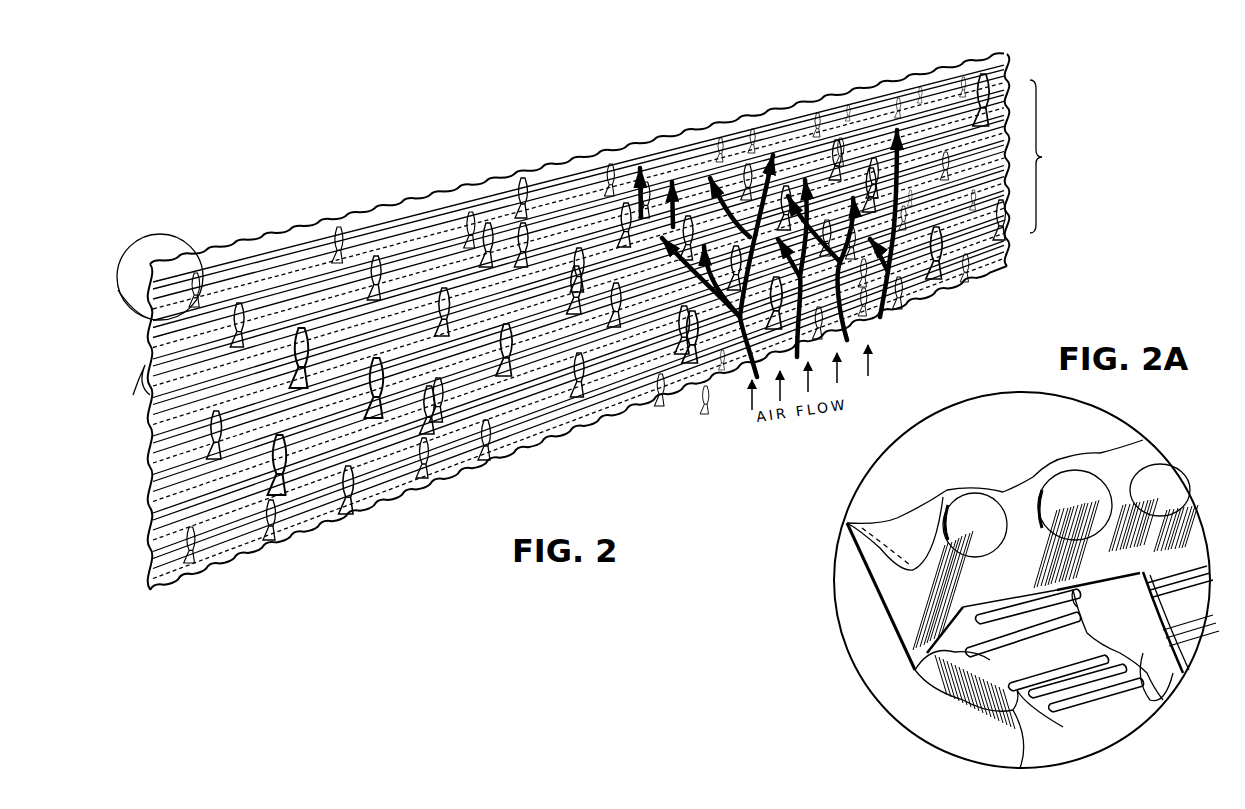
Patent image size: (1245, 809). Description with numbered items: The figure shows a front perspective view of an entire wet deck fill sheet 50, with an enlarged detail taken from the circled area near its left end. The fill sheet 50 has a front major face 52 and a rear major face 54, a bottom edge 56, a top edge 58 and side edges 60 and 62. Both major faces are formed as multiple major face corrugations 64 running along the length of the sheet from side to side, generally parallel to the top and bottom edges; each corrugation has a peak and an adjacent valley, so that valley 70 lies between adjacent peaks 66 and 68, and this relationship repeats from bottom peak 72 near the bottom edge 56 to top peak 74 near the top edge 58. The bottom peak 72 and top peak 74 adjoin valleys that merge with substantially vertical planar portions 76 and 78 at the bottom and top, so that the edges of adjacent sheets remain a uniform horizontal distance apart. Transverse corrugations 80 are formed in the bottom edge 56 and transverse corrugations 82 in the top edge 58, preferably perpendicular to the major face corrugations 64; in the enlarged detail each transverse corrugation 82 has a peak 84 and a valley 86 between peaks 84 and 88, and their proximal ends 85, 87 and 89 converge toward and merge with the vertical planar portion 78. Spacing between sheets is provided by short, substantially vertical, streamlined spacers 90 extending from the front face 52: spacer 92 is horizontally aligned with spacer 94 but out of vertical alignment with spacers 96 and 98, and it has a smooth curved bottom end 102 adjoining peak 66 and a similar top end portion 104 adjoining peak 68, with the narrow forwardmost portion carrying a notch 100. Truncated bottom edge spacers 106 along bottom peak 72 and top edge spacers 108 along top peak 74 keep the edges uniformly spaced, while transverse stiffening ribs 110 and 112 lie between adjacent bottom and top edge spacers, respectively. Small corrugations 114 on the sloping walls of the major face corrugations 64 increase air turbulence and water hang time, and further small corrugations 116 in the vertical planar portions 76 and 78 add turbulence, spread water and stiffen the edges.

In FIG. 2, the fill sheet 50 is at (1050, 200).
In FIG. 2, the front major face 52 is at (985, 245).
In FIG. 2, the rear major face 54 is at (927, 304).
In FIG. 2, the bottom edge 56 is at (652, 402).
In FIG. 2, the top edge 58 is at (665, 127).
In FIG. 2, the side edge 60 is at (1012, 259).
In FIG. 2, the side edge 62 is at (147, 342).
In FIG. 2, the major face corrugations 64 is at (1050, 156).
In FIG. 2, the peak 66 is at (157, 479).
In FIG. 2, the peak 68 is at (157, 431).
In FIG. 2, the valley 70 is at (157, 459).
In FIG. 2, the bottom peak 72 is at (160, 534).
In FIG. 2, the top peak 74 is at (158, 310).
In FIG. 2, the substantially vertical planar portion 76 is at (162, 572).
In FIG. 2, the substantially vertical planar portion 78 is at (262, 245).
In FIG. 2A, the substantially vertical planar portion 78 is at (1180, 540).
In FIG. 2, the transverse corrugations 80 is at (405, 494).
In FIG. 2, the transverse corrugations 82 is at (453, 195).
In FIG. 2A, the transverse corrugations 82 is at (942, 484).
In FIG. 2A, the peak 84 is at (904, 521).
In FIG. 2A, the proximal end 85 is at (916, 584).
In FIG. 2A, the valley 86 is at (953, 492).
In FIG. 2A, the proximal end 87 is at (973, 554).
In FIG. 2A, the peak 88 is at (1016, 488).
In FIG. 2A, the proximal end 89 is at (1042, 544).
In FIG. 2, the spacers 90 is at (586, 266).
In FIG. 2, the spacer 92 is at (367, 388).
In FIG. 2, the spacer 94 is at (519, 393).
In FIG. 2, the spacer 96 is at (432, 432).
In FIG. 2, the spacer 98 is at (291, 363).
In FIG. 2, the notch 100 is at (520, 248).
In FIG. 2, the bottom end 102 is at (457, 487).
In FIG. 2, the top end portion 104 is at (308, 341).
In FIG. 2, the bottom edge spacers 106 is at (349, 510).
In FIG. 2, the top edge spacers 108 is at (335, 240).
In FIG. 2A, the top edge spacers 108 is at (1150, 680).
In FIG. 2, the transverse stiffening rib 110 is at (269, 538).
In FIG. 2, the transverse stiffening rib 112 is at (539, 188).
In FIG. 2, the small corrugations 114 is at (150, 393).
In FIG. 2A, the small corrugations 114 is at (1000, 712).
In FIG. 2, the small corrugations 116 is at (120, 283).
In FIG. 2A, the small corrugations 116 is at (917, 662).